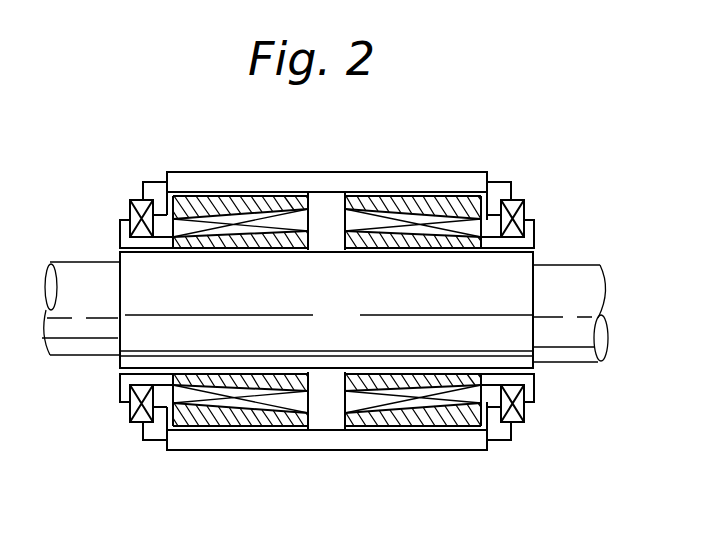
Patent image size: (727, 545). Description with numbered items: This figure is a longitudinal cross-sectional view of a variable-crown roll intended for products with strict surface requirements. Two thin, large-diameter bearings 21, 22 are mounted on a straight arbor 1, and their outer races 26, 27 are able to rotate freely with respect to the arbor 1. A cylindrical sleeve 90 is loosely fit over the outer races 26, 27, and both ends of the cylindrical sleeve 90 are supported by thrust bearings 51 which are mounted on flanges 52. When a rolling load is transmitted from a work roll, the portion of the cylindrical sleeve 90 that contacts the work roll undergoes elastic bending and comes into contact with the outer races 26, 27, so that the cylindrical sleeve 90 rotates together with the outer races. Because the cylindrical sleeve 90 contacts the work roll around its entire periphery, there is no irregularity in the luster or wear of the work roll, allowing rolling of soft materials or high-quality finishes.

The arbor 1 is at (586, 277).
The bearing 21 is at (413, 218).
The bearing 22 is at (177, 229).
The outer race 26 is at (370, 195).
The outer race 27 is at (193, 203).
The thrust bearing 51 is at (133, 201).
The flange 52 is at (150, 187).
The cylindrical sleeve 90 is at (248, 177).